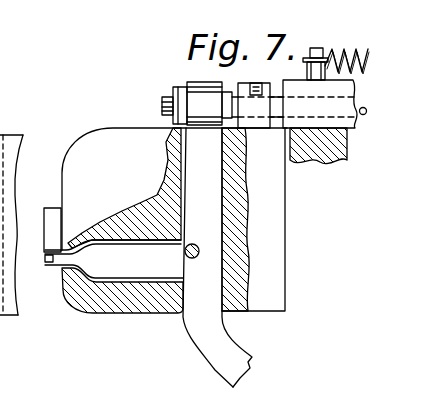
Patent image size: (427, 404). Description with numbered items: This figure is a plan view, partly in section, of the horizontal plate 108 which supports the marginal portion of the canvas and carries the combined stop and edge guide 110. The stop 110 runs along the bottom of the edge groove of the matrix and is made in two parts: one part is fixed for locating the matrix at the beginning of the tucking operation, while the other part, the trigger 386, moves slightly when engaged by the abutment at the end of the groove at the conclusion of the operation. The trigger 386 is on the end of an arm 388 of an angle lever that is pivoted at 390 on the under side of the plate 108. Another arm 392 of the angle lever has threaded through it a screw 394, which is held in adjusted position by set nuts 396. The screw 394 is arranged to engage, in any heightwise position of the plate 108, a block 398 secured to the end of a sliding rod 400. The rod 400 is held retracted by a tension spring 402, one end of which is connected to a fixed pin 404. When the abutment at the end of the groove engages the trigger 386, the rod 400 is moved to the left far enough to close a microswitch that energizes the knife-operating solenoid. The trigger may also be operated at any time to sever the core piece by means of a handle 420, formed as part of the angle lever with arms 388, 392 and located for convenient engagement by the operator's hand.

The horizontal plate 108 is at (143, 298).
The combined stop and edge guide 110 is at (52, 212).
The trigger 386 is at (53, 267).
The arm of the angle lever 388 is at (113, 254).
The pivot 390 is at (196, 243).
The arm of the angle lever 392 is at (200, 168).
The screw 394 is at (163, 101).
The set nuts 396 is at (188, 83).
The block 398 is at (259, 84).
The sliding rod 400 is at (356, 122).
The tension spring 402 is at (349, 50).
The fixed pin 404 is at (316, 48).
The handle 420 is at (210, 372).